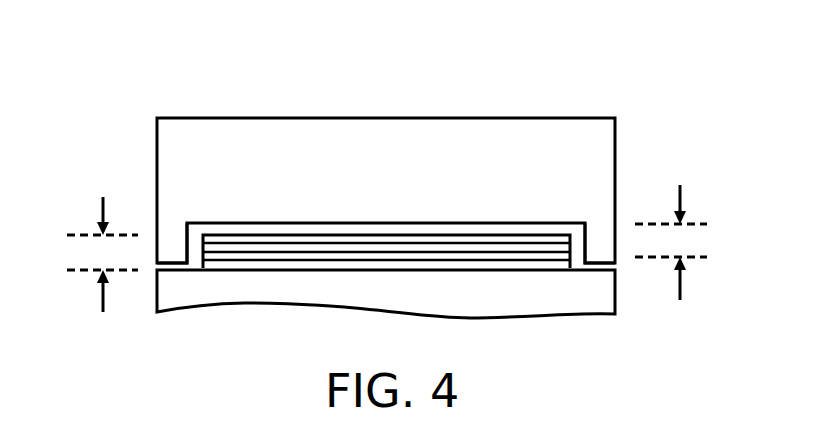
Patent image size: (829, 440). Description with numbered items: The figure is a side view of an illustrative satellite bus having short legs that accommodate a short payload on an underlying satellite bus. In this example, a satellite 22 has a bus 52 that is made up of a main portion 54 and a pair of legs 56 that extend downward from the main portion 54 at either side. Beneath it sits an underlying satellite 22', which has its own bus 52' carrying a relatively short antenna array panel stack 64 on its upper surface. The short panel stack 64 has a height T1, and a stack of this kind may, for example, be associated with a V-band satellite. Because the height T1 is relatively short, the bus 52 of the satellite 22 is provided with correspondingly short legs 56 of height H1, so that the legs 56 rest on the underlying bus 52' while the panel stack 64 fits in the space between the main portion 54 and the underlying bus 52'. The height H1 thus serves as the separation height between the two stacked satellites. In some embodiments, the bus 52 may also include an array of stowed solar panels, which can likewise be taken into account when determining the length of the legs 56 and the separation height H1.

The satellite 22 is at (409, 188).
The underlying satellite 22' is at (445, 305).
The bus 52 is at (386, 152).
The bus 52' is at (386, 322).
The main portion 54 is at (250, 148).
The legs 56 is at (165, 233).
The antenna array panel stack 64 is at (250, 252).
The height T1 is at (102, 254).
The height H1 is at (671, 242).